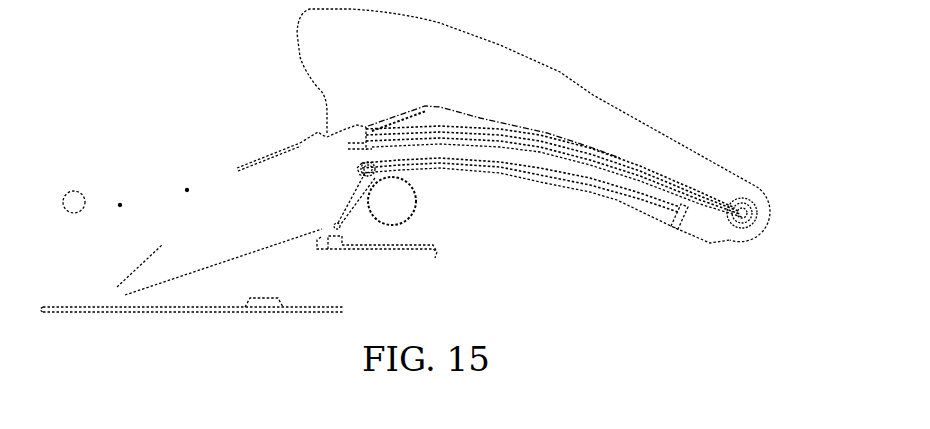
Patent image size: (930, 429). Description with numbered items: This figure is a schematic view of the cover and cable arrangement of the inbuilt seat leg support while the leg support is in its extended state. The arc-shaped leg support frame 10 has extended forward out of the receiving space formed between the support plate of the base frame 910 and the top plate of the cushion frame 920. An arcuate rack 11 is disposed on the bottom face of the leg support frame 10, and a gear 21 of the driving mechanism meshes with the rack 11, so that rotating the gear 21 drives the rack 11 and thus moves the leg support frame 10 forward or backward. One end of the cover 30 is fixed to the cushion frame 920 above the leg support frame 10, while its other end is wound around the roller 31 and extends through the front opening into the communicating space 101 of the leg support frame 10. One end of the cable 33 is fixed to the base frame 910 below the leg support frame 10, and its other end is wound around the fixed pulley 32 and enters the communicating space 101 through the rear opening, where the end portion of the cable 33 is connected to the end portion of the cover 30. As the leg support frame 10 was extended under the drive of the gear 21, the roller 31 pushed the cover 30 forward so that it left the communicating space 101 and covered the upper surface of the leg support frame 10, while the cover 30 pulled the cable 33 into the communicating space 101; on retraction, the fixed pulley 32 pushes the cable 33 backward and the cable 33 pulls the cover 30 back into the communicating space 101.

The cover 30 is at (597, 96).
The roller 31 is at (745, 212).
The fixed pulley 32 is at (360, 171).
The cable 33 is at (348, 200).
The leg support frame 10 is at (498, 142).
The rack 11 is at (451, 173).
The gear 21 is at (410, 206).
The communicating space 101 is at (625, 195).
The base frame 910 is at (388, 249).
The cushion frame 920 is at (302, 142).